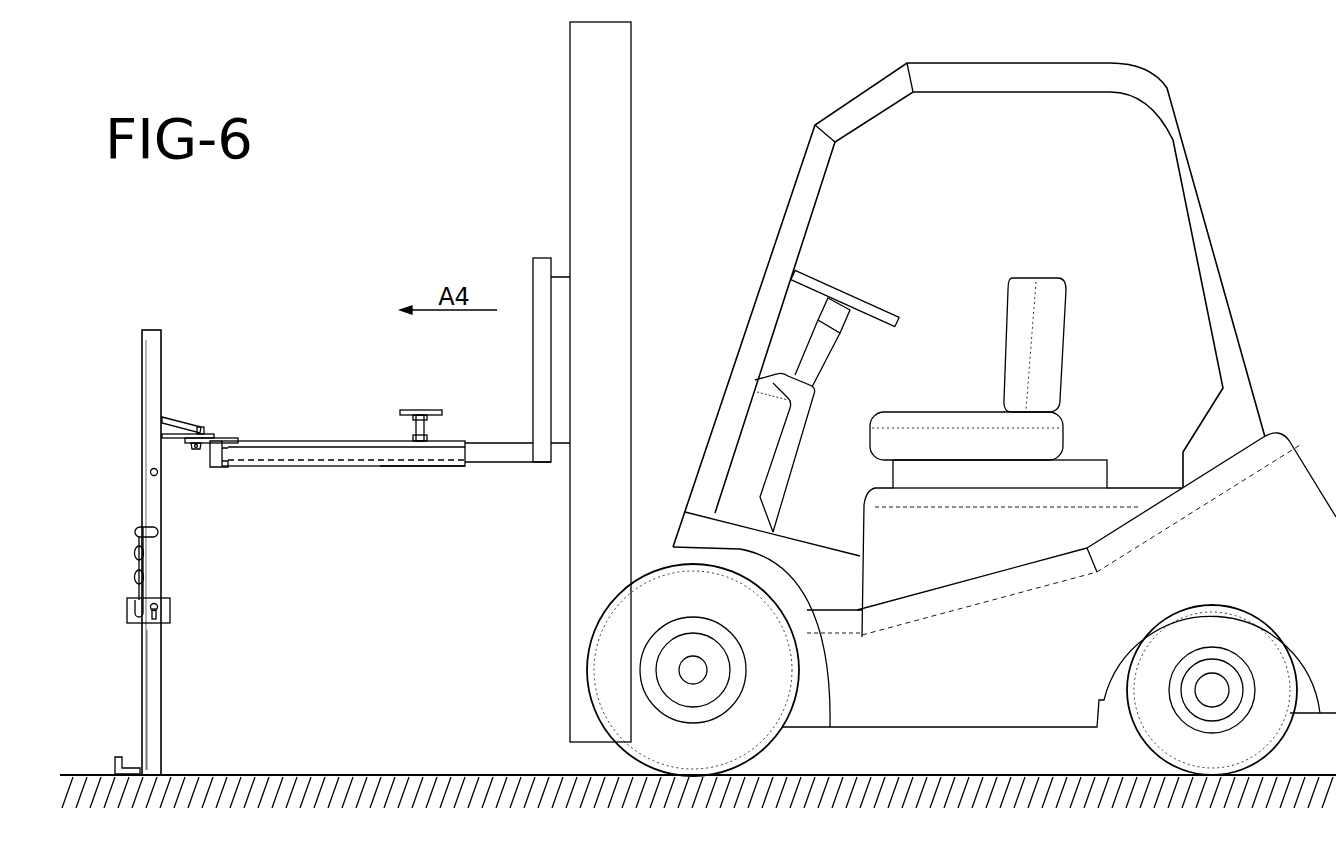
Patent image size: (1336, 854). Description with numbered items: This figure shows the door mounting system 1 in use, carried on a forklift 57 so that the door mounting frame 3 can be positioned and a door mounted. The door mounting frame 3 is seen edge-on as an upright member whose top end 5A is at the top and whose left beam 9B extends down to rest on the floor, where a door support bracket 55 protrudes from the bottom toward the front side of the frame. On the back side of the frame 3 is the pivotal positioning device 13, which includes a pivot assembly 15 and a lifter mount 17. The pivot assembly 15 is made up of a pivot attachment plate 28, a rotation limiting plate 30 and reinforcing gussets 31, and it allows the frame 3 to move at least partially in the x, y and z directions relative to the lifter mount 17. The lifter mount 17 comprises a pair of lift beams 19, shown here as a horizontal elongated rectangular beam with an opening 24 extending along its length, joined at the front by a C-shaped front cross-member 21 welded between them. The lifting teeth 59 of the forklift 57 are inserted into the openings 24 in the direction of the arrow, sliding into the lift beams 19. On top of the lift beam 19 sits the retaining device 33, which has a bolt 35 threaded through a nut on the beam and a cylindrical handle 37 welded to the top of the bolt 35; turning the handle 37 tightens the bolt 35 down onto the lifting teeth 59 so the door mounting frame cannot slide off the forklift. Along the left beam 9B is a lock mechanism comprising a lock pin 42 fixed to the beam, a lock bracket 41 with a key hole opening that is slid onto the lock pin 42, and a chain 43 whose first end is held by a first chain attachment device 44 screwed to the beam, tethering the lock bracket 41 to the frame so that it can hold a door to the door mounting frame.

The door mounting system 1 is at (197, 658).
The door mounting frame 3 is at (136, 417).
The top end 5A is at (148, 322).
The left beam 9B is at (150, 655).
The pivotal positioning device 13 is at (281, 434).
The pivot assembly 15 is at (204, 414).
The lifter mount 17 is at (272, 476).
The lift beams 19 is at (412, 468).
The front cross-member 21 is at (215, 466).
The openings 24 is at (342, 458).
The pivot attachment plate 28 is at (198, 452).
The rotation limiting plate 30 is at (215, 441).
The gussets 31 is at (196, 430).
The retaining device 33 is at (392, 427).
The bolt 35 is at (427, 428).
The handle 37 is at (405, 410).
The lock bracket 41 is at (172, 610).
The lock pin 42 is at (150, 472).
The chain 43 is at (137, 578).
The first chain attachment device 44 is at (135, 532).
The door support brackets 55 is at (117, 762).
The forklift 57 is at (1178, 84).
The lifting teeth 59 is at (497, 464).